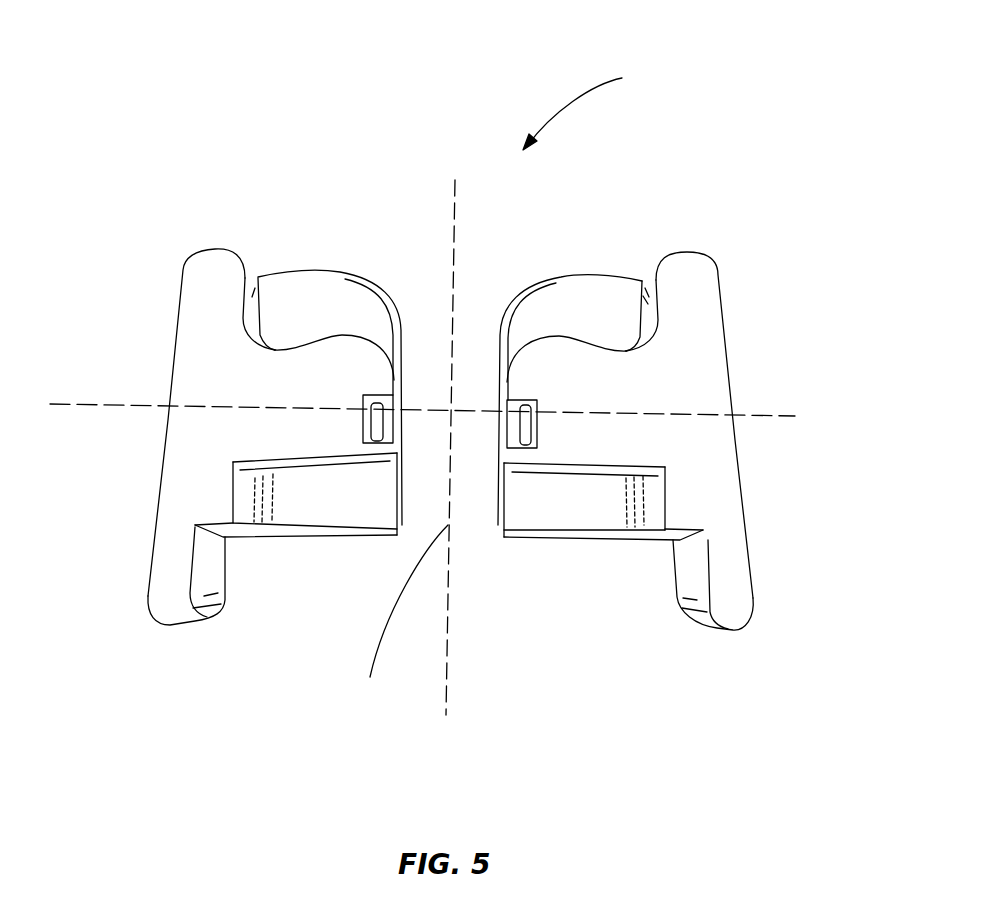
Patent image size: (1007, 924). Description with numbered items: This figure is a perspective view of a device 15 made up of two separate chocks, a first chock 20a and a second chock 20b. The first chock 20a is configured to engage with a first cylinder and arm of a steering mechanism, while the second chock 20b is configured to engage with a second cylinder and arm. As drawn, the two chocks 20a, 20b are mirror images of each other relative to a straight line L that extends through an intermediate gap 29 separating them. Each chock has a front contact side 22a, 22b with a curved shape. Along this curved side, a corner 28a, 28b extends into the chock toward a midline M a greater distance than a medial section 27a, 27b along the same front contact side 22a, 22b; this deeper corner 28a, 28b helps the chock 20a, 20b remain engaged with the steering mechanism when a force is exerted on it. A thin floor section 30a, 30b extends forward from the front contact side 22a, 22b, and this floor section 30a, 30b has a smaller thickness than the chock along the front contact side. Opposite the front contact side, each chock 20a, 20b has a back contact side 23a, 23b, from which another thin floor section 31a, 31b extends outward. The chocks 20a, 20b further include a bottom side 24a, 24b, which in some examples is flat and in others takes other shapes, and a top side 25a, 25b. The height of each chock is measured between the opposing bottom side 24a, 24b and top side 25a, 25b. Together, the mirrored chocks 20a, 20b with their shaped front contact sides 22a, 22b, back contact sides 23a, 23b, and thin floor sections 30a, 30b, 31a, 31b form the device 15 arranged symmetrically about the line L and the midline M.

The device 15 is at (585, 108).
The first chock 20a is at (202, 389).
The second chock 20b is at (720, 437).
The front contact side 22a is at (320, 340).
The front contact side 22b is at (602, 350).
The back contact side 23a is at (315, 462).
The back contact side 23b is at (610, 468).
The bottom side 24a is at (266, 538).
The bottom side 24b is at (653, 543).
The top side 25a is at (274, 386).
The top side 25b is at (697, 353).
The medial section 27a is at (398, 330).
The medial section 27b is at (533, 340).
The corner 28a is at (268, 353).
The corner 28b is at (602, 350).
The intermediate gap 29 is at (404, 615).
The floor section 30a is at (299, 300).
The floor section 30b is at (620, 303).
The floor section 31a is at (350, 498).
The floor section 31b is at (565, 502).
The midline M is at (233, 410).
The straight line L is at (446, 680).